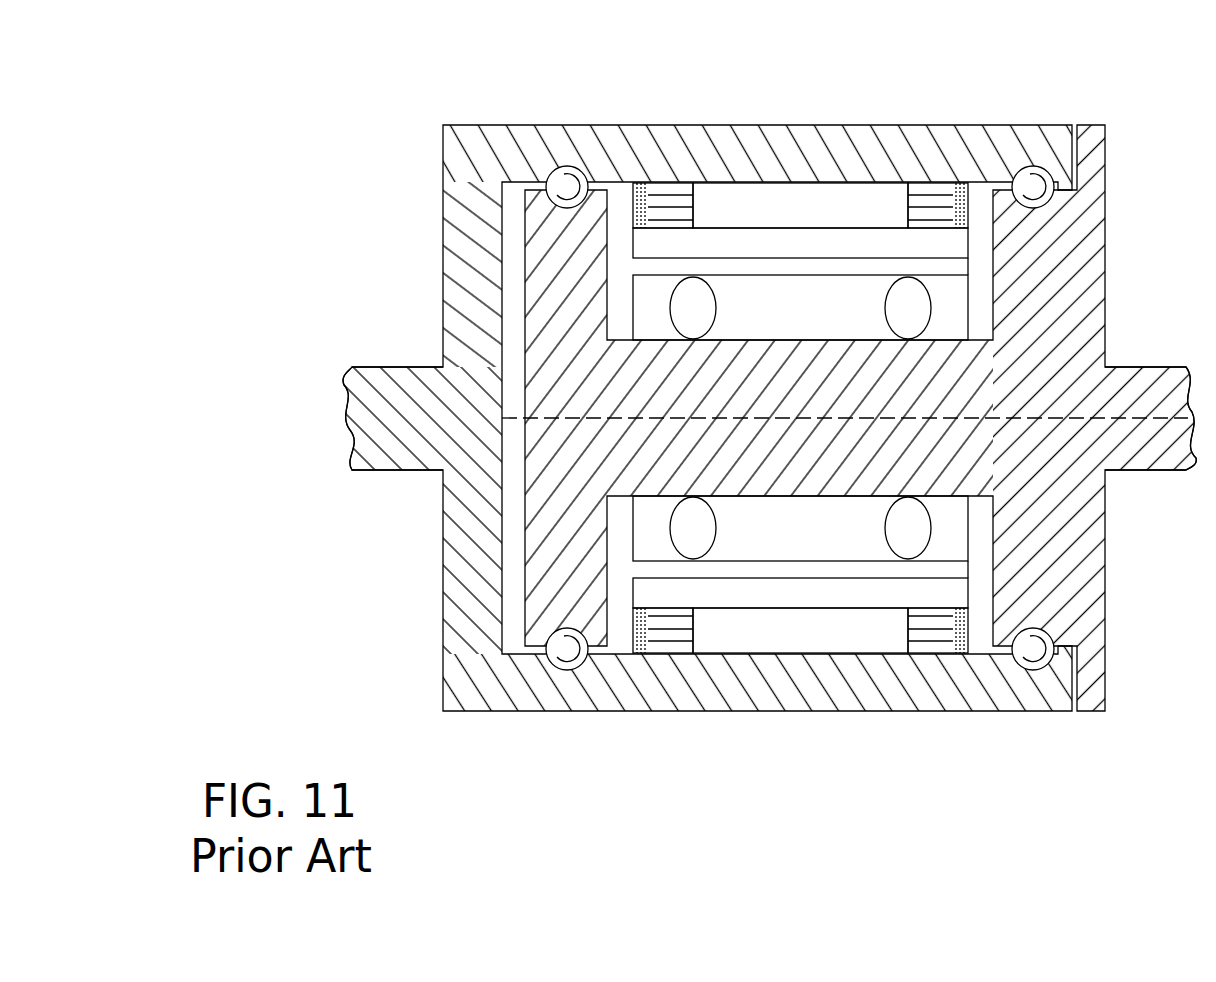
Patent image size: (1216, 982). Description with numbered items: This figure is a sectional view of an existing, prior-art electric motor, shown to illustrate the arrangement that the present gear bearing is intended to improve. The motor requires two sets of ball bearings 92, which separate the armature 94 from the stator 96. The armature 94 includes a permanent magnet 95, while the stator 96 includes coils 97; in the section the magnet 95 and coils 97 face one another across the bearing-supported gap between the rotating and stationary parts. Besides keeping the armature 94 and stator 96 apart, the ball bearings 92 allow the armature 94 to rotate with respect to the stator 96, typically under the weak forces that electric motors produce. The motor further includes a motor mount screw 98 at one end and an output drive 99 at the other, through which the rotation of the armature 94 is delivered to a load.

The ball bearings 92 is at (566, 178).
The armature 94 is at (838, 305).
The permanent magnet 95 is at (957, 300).
The stator 96 is at (797, 197).
The coils 97 is at (660, 200).
The motor mount screw 98 is at (372, 462).
The output drive 99 is at (1165, 462).